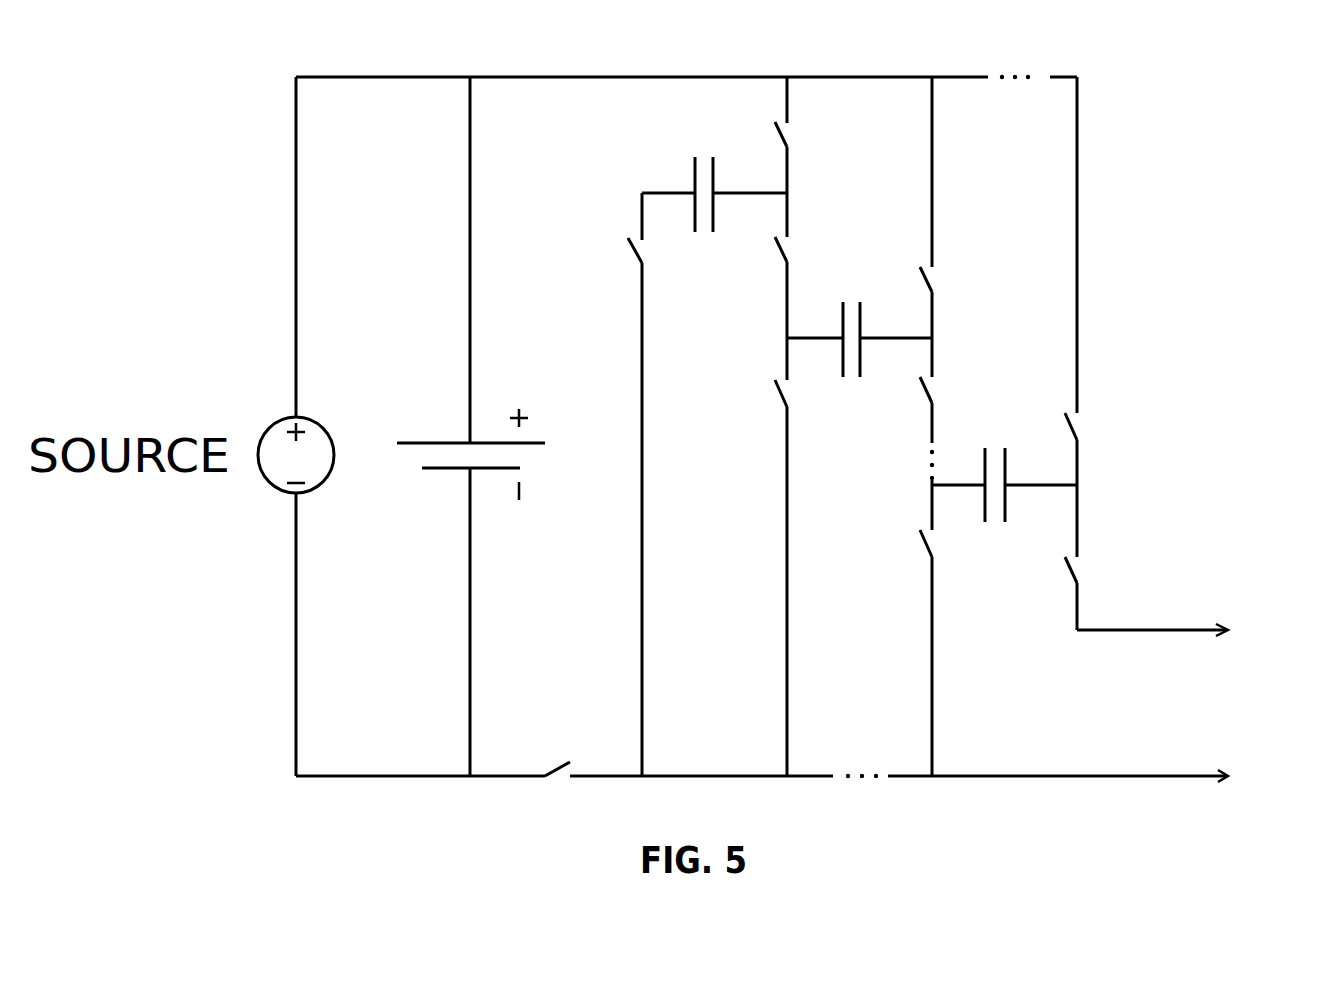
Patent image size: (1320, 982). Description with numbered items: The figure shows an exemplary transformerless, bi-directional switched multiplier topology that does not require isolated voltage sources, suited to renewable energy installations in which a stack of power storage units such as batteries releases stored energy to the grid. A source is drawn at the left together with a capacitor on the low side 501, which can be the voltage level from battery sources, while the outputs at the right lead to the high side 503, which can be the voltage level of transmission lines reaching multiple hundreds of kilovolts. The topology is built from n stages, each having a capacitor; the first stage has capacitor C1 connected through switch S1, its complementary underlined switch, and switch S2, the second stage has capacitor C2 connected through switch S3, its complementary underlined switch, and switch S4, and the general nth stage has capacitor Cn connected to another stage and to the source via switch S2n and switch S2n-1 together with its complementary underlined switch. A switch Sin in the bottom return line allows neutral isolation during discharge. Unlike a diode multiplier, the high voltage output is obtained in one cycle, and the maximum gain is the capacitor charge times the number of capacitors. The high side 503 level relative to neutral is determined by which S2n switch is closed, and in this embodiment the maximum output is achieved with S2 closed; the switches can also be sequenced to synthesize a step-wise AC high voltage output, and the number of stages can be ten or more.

The low side 501 is at (504, 426).
The high side 503 is at (1185, 695).
The input switch Sin is at (556, 746).
The switch S1 is at (821, 264).
The switch S2 is at (601, 484).
The switch S3 is at (966, 403).
The switch S4 is at (747, 538).
The capacitor C1 is at (714, 223).
The capacitor C2 is at (859, 366).
The capacitor Cn is at (1004, 513).
The switch S2n is at (894, 613).
The switch S(2n-1) S2n-1 is at (1114, 586).